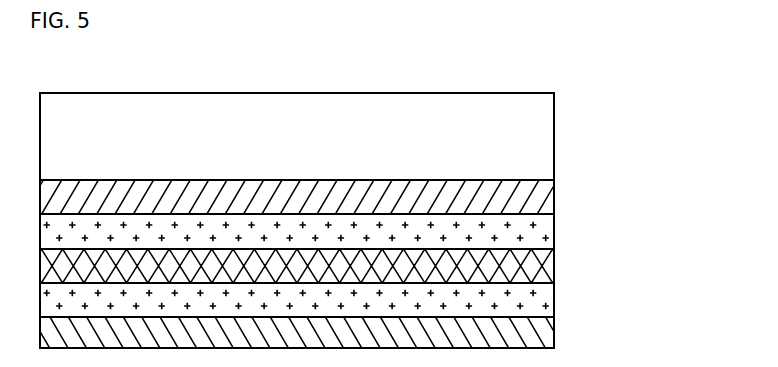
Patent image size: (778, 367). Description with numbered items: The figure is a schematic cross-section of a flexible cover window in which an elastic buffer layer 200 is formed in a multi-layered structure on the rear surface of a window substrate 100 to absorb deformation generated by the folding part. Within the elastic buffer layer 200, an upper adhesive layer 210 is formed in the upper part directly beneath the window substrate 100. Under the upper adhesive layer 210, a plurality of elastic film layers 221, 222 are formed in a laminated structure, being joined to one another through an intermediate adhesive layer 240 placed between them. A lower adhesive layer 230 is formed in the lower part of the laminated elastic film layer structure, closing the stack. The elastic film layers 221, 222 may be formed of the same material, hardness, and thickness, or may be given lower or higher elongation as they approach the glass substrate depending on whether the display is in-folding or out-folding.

The window substrate 100 is at (542, 137).
The elastic buffer layer 200 is at (377, 264).
The upper adhesive layer 210 is at (538, 203).
The elastic film layer 221 is at (540, 235).
The intermediate adhesive layer 240 is at (540, 268).
The elastic film layer 222 is at (540, 303).
The lower adhesive layer 230 is at (350, 332).